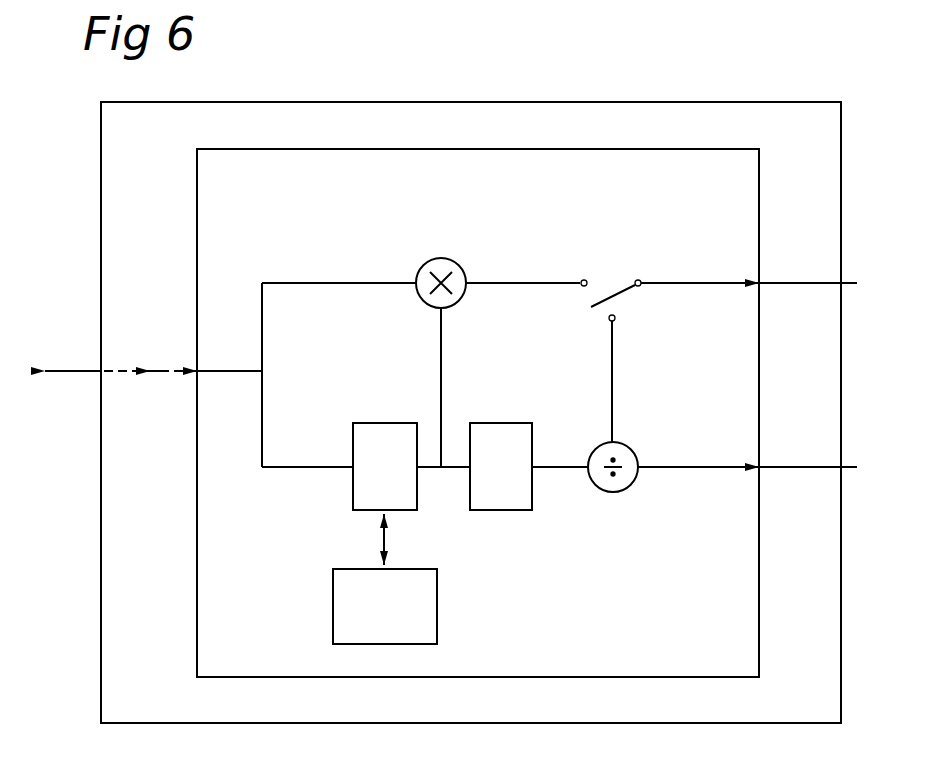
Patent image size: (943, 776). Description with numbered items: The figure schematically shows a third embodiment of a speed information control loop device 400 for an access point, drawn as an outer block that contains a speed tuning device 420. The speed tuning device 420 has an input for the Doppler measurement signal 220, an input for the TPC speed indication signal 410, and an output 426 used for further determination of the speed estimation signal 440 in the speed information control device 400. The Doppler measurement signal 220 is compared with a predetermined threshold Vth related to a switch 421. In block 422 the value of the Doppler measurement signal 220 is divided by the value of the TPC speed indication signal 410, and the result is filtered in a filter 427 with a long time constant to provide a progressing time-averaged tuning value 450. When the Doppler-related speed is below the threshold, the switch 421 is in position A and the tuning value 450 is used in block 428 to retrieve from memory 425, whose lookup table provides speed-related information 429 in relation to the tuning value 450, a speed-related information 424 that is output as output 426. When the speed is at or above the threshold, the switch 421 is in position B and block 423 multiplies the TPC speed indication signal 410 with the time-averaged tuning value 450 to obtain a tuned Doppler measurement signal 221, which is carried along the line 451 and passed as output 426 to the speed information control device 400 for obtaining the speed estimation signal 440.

The speed information control loop device 400 is at (637, 102).
The speed tuning device 420 is at (600, 158).
The feedback bus line 451 is at (262, 330).
The tuned Doppler measurement signal 221 is at (318, 283).
The speed-related information 424 is at (311, 467).
The multiplication block 423 is at (443, 262).
The tuning value 450 is at (445, 469).
The switch 421 is at (658, 255).
The Doppler measurement signal 220 is at (798, 283).
The division block 422 is at (627, 479).
The TPC speed indication signal 410 is at (805, 466).
The retrieval block 428 is at (386, 432).
The filter 427 is at (482, 432).
The speed-related information 429 is at (386, 535).
The memory 425 is at (428, 588).
The output 426 is at (197, 370).
The speed estimation signal 440 is at (80, 371).